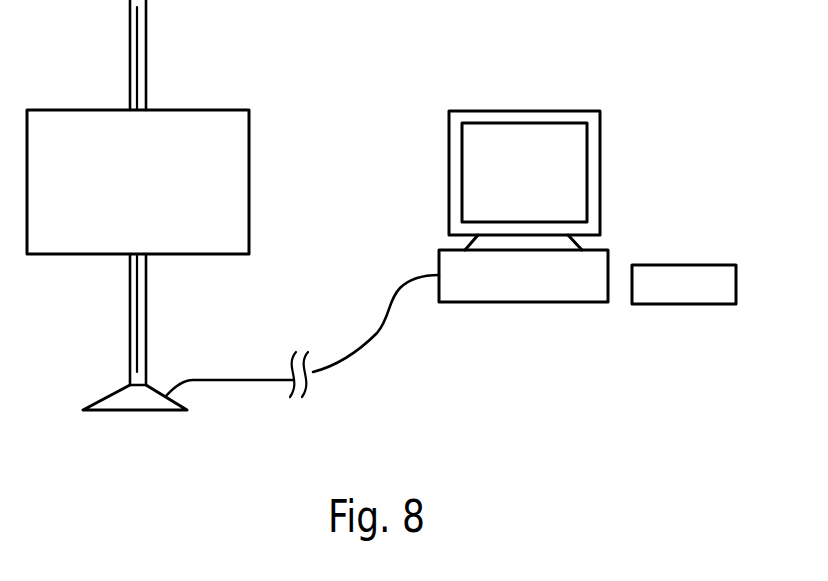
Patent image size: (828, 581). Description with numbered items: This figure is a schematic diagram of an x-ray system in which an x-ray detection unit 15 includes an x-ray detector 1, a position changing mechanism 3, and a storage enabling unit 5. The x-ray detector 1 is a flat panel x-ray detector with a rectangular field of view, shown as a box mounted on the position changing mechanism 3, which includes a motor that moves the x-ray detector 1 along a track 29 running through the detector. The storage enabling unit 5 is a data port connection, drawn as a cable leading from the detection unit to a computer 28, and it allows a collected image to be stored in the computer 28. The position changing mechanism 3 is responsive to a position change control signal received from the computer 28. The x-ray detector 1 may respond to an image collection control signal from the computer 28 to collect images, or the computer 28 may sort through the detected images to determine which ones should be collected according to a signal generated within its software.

The x-ray detector 1 is at (249, 182).
The position changing mechanism 3 is at (146, 50).
The track 29 is at (137, 20).
The storage enabling unit 5 is at (228, 380).
The x-ray detection unit 15 is at (195, 435).
The computer 28 is at (534, 322).